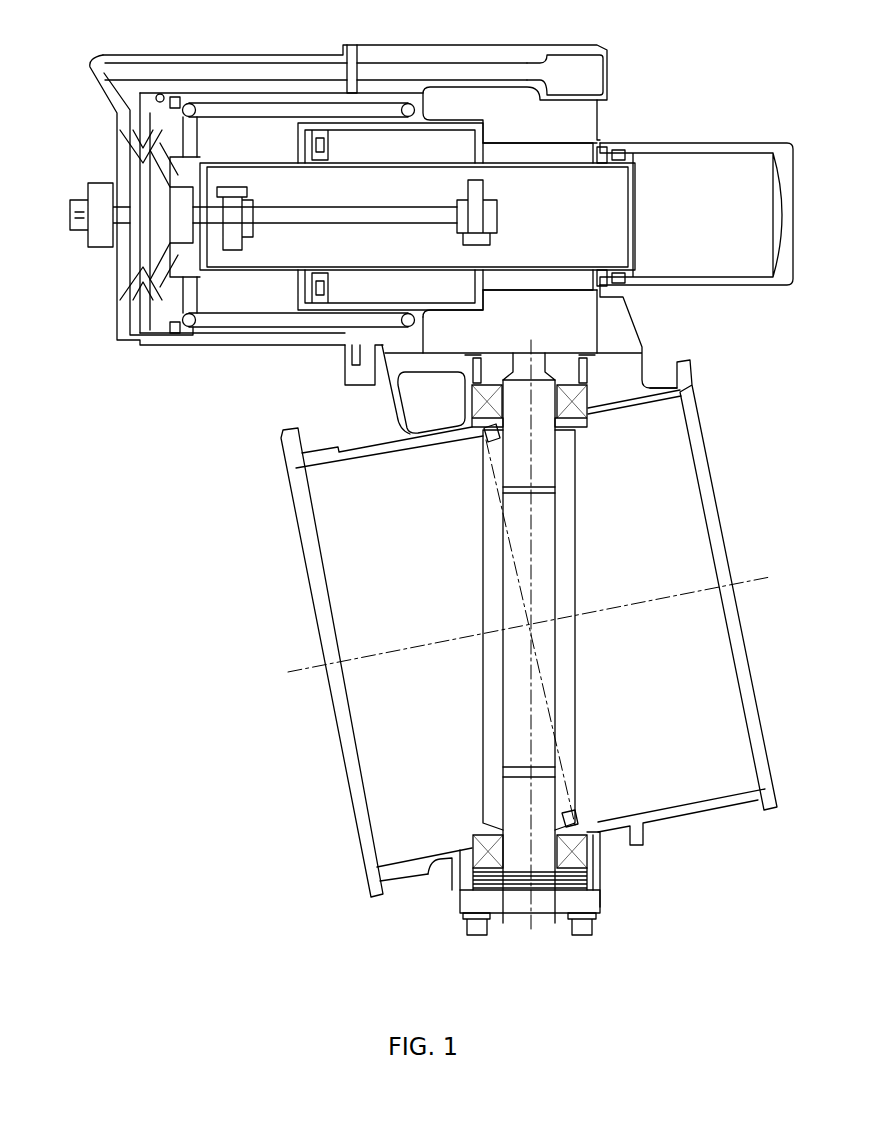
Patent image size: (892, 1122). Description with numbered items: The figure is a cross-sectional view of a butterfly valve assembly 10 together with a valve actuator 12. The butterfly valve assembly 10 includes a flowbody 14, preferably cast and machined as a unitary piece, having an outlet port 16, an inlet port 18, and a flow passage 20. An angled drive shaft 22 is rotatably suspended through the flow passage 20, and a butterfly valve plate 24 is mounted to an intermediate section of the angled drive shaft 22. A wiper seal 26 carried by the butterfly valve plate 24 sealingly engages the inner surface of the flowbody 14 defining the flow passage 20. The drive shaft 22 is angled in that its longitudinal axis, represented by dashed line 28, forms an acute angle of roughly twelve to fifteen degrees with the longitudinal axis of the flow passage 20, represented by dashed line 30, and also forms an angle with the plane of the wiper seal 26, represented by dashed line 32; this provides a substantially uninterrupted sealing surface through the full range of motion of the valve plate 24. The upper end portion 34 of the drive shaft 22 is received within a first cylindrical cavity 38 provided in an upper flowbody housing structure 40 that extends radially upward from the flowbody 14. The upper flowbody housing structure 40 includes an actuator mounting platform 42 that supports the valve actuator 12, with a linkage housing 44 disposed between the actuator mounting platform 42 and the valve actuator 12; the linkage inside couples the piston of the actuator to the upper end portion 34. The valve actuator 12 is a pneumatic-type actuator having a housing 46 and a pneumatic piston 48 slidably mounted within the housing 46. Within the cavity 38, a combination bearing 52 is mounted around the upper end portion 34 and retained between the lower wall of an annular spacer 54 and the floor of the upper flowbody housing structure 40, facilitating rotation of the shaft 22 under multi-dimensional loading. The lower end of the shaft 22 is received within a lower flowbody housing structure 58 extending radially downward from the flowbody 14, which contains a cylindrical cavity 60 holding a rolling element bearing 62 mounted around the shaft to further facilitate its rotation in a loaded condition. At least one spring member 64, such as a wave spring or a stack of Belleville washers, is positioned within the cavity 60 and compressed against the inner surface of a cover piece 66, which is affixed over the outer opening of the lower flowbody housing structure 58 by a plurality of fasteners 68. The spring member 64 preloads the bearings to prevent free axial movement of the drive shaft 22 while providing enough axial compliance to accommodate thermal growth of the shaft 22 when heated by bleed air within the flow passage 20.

The butterfly valve assembly 10 is at (240, 455).
The valve actuator 12 is at (633, 143).
The flowbody 14 is at (700, 818).
The outlet port 16 is at (343, 832).
The inlet port 18 is at (705, 410).
The flow passage 20 is at (375, 588).
The angled drive shaft 22 is at (555, 520).
The butterfly valve plate 24 is at (567, 463).
The wiper seal 26 is at (487, 438).
The dashed line 28 is at (545, 578).
The dashed line 30 is at (670, 597).
The dashed line 32 is at (545, 677).
The upper end portion 34 is at (527, 353).
The first cylindrical cavity 38 is at (470, 402).
The upper flowbody housing structure 40 is at (395, 414).
The actuator mounting platform 42 is at (432, 353).
The linkage housing 44 is at (599, 336).
The housing 46 is at (118, 333).
The pneumatic piston 48 is at (432, 160).
The combination bearing 52 is at (492, 382).
The annular spacer 54 is at (580, 370).
The lower flowbody housing structure 58 is at (462, 888).
The cylindrical cavity 60 is at (592, 855).
The rolling element bearing 62 is at (478, 852).
The spring member 64 is at (567, 885).
The cover piece 66 is at (598, 907).
The fasteners 68 is at (473, 935).